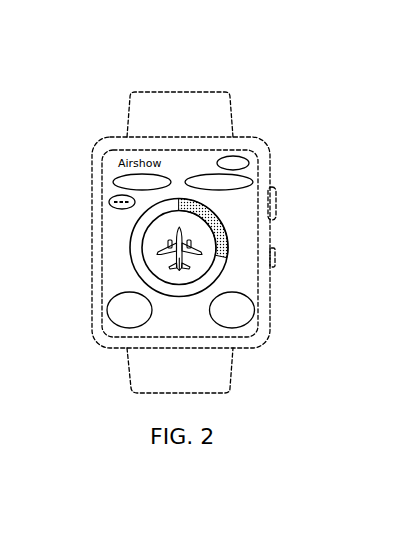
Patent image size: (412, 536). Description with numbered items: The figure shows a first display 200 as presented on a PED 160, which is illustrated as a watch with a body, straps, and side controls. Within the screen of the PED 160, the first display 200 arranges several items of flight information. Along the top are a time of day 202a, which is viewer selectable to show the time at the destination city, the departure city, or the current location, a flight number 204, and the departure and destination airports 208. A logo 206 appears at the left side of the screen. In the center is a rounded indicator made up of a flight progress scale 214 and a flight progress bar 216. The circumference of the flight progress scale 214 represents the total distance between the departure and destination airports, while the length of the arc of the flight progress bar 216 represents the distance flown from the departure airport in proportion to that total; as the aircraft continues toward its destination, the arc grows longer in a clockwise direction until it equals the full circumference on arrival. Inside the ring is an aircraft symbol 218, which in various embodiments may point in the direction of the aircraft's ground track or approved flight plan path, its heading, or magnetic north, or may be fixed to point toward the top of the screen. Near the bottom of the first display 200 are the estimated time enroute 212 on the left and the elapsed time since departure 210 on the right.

The PED 160 is at (208, 93).
The first display 200 is at (213, 150).
The time of day (TOD) 202a is at (242, 157).
The flight number 204 is at (168, 176).
The logo 206 is at (108, 203).
The departure and destination airports 208 is at (252, 175).
The elapsed time since departure 210 is at (252, 319).
The estimated time enroute (ETE) 212 is at (110, 318).
The flight progress scale 214 is at (212, 284).
The flight progress bar 216 is at (227, 244).
The aircraft symbol 218 is at (160, 250).